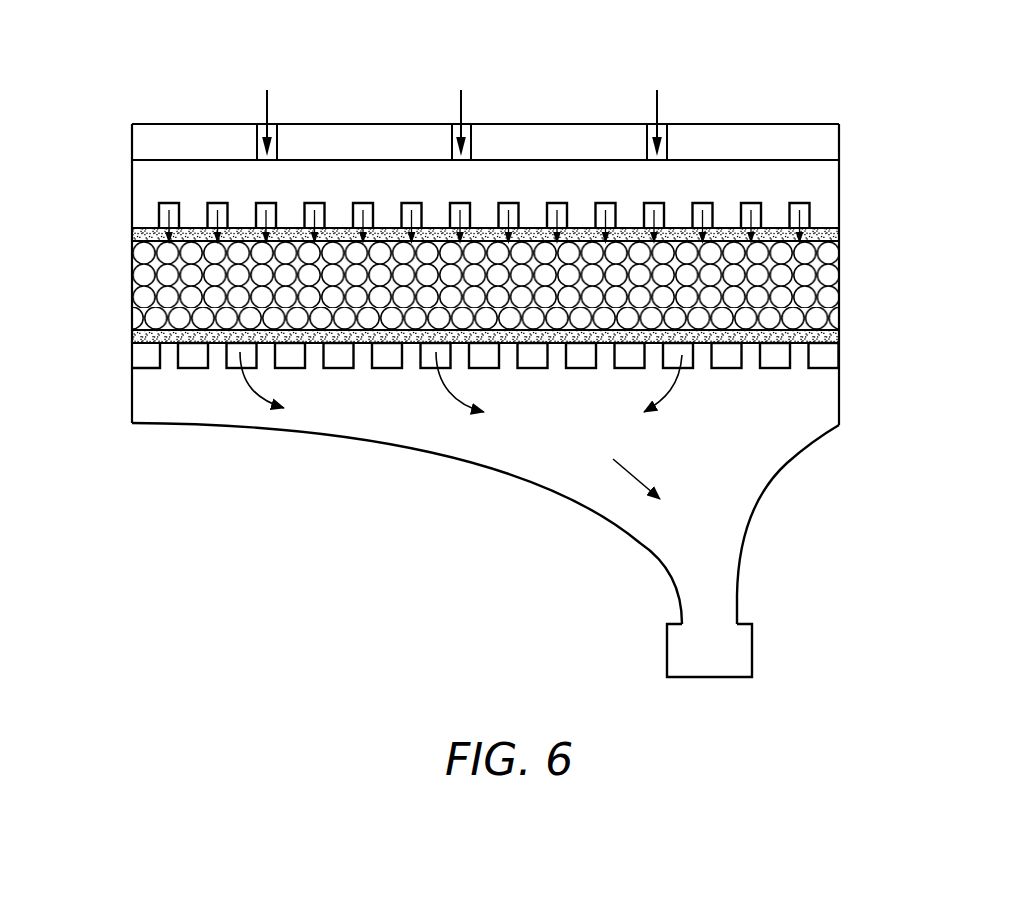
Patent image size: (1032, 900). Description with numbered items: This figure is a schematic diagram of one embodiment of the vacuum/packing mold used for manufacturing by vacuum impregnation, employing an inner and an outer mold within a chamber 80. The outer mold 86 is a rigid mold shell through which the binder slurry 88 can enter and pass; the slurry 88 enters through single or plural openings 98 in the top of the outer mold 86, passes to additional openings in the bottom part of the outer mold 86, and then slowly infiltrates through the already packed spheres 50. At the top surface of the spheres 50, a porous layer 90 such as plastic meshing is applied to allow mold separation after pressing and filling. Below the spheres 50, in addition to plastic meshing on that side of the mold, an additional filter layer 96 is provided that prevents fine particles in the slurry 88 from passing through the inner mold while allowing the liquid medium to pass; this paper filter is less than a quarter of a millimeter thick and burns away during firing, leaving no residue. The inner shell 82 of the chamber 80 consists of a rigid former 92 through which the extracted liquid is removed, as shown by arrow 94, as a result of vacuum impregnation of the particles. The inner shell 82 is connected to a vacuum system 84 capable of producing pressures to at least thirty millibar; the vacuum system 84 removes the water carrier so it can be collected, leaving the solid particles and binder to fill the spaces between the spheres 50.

The chamber 80 is at (438, 60).
The outer mold 86 is at (138, 218).
The binder slurry 88 is at (268, 102).
The openings 98 is at (667, 147).
The porous layer 90 is at (839, 236).
The spheres 50 is at (827, 277).
The filter layer 96 is at (839, 340).
The rigid former 92 is at (170, 365).
The inner shell 82 is at (182, 403).
The vacuum system 84 is at (737, 652).
The arrow 94 is at (632, 473).